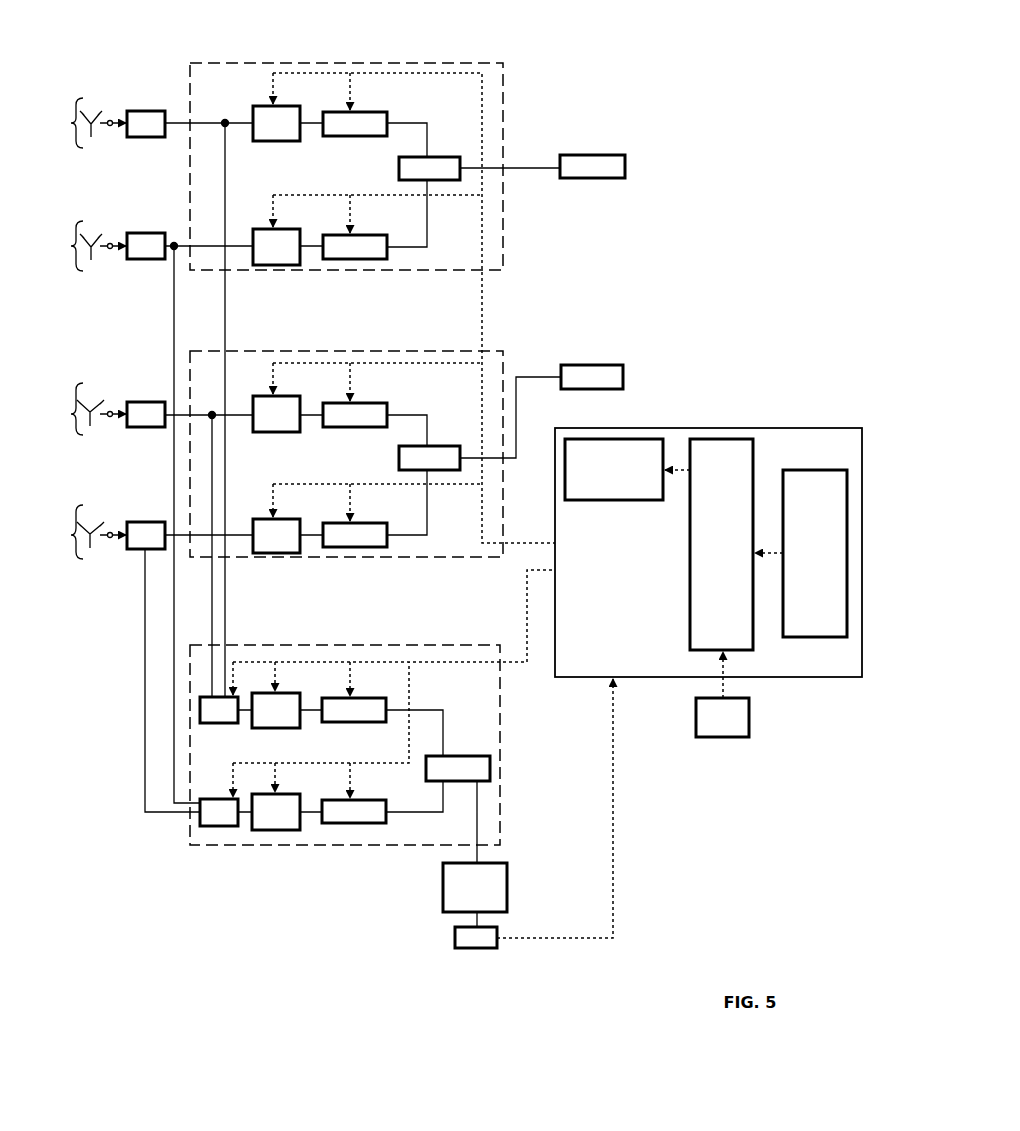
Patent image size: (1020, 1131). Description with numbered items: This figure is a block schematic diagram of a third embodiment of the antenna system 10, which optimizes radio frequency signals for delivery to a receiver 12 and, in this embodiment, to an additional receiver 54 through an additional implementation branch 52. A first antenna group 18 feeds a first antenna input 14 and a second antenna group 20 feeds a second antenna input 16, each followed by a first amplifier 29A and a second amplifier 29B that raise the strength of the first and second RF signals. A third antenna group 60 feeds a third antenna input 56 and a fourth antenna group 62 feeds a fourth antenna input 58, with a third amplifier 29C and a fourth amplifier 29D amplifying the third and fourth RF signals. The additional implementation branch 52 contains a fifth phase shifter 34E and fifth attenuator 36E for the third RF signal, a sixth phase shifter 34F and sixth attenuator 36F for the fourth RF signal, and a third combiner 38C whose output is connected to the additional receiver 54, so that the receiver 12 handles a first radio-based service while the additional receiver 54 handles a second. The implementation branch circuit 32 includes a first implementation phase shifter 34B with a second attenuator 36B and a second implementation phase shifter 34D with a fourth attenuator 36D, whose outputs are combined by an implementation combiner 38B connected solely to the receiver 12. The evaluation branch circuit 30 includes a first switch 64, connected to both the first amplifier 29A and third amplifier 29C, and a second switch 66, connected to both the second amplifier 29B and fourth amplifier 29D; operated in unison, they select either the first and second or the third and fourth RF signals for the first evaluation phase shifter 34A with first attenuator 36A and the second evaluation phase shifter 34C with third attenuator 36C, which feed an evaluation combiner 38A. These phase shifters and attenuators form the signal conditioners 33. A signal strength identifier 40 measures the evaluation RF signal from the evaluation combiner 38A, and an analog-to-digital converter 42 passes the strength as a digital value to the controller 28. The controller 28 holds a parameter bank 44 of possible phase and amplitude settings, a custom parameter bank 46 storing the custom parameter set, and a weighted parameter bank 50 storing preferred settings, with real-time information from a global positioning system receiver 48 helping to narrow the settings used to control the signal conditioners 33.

The antenna system 10 is at (642, 112).
The receiver 12 is at (595, 364).
The first antenna input 14 is at (109, 410).
The second antenna input 16 is at (109, 531).
The first antenna group 18 is at (75, 409).
The second antenna group 20 is at (75, 532).
The controller 28 is at (845, 428).
The first amplifier 29A is at (155, 401).
The second amplifier 29B is at (140, 550).
The third amplifier 29C is at (155, 110).
The fourth amplifier 29D is at (155, 232).
The evaluation branch circuit 30 is at (312, 846).
The implementation branch circuit 32 is at (430, 350).
The signal conditioner 33 is at (357, 138).
The first evaluation phase shifter 34A is at (300, 703).
The first implementation phase shifter 34B is at (265, 433).
The second evaluation phase shifter 34C is at (275, 831).
The second implementation phase shifter 34D is at (275, 554).
The fifth phase shifter 34E is at (262, 105).
The sixth phase shifter 34F is at (290, 266).
The first attenuator 36A is at (386, 702).
The second attenuator 36B is at (358, 402).
The third attenuator 36C is at (335, 824).
The fourth attenuator 36D is at (387, 530).
The fifth attenuator 36E is at (343, 111).
The sixth attenuator 36F is at (345, 260).
The evaluation combiner 38A is at (455, 755).
The implementation combiner 38B is at (433, 445).
The third combiner 38C is at (432, 156).
The signal strength identifier 40 is at (442, 883).
The analog-to-digital converter 42 is at (477, 949).
The parameter bank 44 is at (740, 438).
The custom parameter bank 46 is at (810, 638).
The global positioning system receiver 48 is at (725, 738).
The weighted parameter bank 50 is at (626, 438).
The additional implementation branch 52 is at (430, 62).
The additional receiver 54 is at (595, 179).
The third antenna input 56 is at (109, 118).
The fourth antenna input 58 is at (109, 241).
The third antenna group 60 is at (74, 123).
The fourth antenna group 62 is at (74, 246).
The first switch 64 is at (225, 724).
The second switch 66 is at (215, 827).